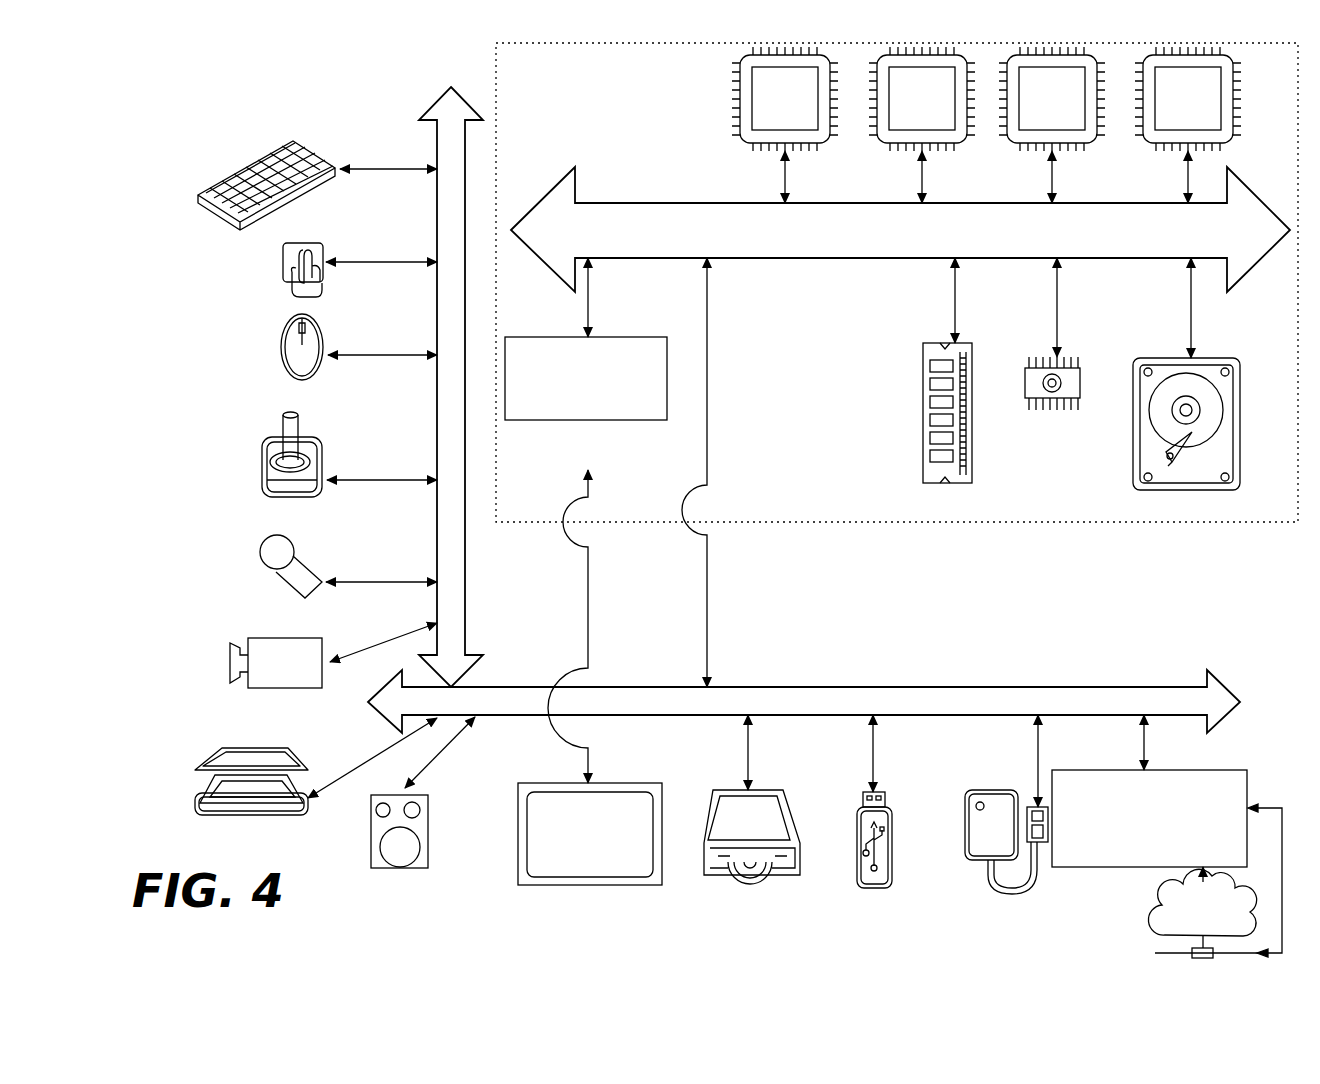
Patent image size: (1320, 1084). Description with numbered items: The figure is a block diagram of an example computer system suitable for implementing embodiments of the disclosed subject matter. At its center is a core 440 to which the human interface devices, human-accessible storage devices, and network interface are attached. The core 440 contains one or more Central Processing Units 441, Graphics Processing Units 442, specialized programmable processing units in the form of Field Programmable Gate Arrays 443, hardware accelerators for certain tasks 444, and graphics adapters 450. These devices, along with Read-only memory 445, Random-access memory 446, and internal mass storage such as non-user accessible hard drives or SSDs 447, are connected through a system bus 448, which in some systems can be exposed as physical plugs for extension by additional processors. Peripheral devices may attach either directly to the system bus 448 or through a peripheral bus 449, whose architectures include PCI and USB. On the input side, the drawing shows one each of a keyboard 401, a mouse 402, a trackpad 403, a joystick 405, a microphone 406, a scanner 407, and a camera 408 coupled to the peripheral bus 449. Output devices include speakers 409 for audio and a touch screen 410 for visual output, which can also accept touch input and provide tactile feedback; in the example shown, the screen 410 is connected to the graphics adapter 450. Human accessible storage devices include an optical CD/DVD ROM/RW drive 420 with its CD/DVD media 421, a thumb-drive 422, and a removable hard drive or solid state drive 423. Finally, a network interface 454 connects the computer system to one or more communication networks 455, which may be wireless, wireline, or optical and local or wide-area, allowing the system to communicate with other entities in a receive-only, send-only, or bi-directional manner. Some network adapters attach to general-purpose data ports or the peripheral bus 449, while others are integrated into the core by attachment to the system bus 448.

The keyboard 401 is at (198, 195).
The mouse 402 is at (281, 345).
The trackpad 403 is at (283, 265).
The joystick 405 is at (262, 480).
The microphone 406 is at (260, 552).
The scanner 407 is at (195, 805).
The camera 408 is at (230, 665).
The speakers 409 is at (390, 868).
The touch screen 410 is at (588, 885).
The CD/DVD ROM/RW 420 is at (795, 873).
The CD/DVD media 421 is at (733, 880).
The thumb-drive 422 is at (873, 890).
The removable hard drive or solid state drive 423 is at (975, 865).
The core 440 is at (892, 522).
The Central Processing Unit 441 is at (767, 125).
The Graphics Processing Unit 442 is at (904, 125).
The Field Programmable Gate Array 443 is at (1034, 125).
The hardware accelerator 444 is at (1170, 125).
The Read-only memory 445 is at (1045, 410).
The Random-access memory 446 is at (920, 442).
The internal mass storage 447 is at (1148, 355).
The system bus 448 is at (900, 229).
The peripheral bus 449 is at (437, 130).
The graphics adapter 450 is at (567, 416).
The network interface 454 is at (1098, 865).
The communication network 455 is at (1157, 925).